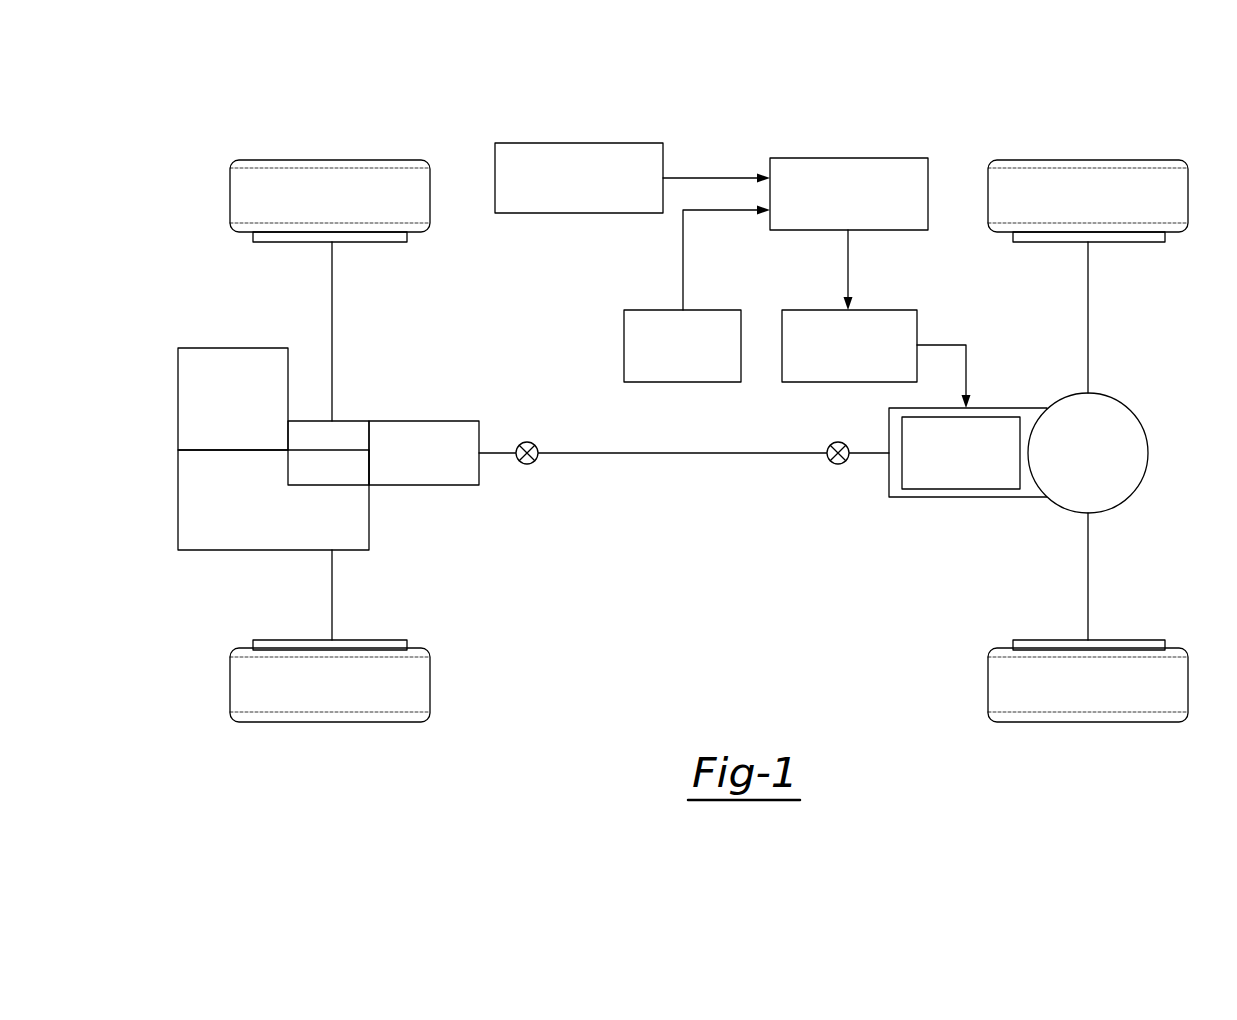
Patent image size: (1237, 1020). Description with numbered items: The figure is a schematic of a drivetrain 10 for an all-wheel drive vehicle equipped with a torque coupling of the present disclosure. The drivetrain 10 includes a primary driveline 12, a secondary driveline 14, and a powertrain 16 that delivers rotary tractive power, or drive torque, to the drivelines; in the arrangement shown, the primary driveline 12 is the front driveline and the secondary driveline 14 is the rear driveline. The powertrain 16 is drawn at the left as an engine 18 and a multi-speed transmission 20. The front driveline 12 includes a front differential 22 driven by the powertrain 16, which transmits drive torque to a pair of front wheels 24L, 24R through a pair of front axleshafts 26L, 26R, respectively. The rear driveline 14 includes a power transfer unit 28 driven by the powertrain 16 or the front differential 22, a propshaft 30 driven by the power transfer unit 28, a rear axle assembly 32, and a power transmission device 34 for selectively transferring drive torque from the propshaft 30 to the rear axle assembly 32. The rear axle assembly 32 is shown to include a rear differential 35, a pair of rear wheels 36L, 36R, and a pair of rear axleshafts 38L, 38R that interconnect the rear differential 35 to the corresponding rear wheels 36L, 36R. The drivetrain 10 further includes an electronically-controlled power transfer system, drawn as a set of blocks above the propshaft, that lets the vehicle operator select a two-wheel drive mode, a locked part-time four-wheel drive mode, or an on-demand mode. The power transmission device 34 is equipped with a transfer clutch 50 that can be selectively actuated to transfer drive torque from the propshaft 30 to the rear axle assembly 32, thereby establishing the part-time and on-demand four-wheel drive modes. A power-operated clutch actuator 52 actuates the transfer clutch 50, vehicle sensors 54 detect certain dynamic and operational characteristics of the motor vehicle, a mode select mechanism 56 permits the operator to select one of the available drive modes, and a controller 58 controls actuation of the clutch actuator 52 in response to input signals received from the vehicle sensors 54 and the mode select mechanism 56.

The drivetrain 10 is at (801, 108).
The primary driveline 12 is at (424, 401).
The secondary driveline 14 is at (684, 475).
The powertrain 16 is at (321, 478).
The engine 18 is at (222, 412).
The multi-speed transmission 20 is at (243, 517).
The front differential 22 is at (322, 470).
The front wheel 24R is at (288, 160).
The front wheel 24L is at (367, 722).
The front axleshaft 26R is at (332, 300).
The front axleshaft 26L is at (332, 607).
The power transfer unit 28 is at (410, 467).
The propshaft 30 is at (645, 453).
The rear axle assembly 32 is at (1051, 451).
The power transmission device 34 is at (968, 461).
The rear differential 35 is at (1137, 437).
The rear wheel 36R is at (1153, 160).
The rear wheel 36L is at (1142, 722).
The rear axleshaft 38R is at (1088, 292).
The rear axleshaft 38L is at (1088, 570).
The transfer clutch 50 is at (1002, 407).
The clutch actuator 52 is at (897, 310).
The vehicle sensors 54 is at (643, 310).
The mode select mechanism 56 is at (553, 143).
The controller 58 is at (898, 158).